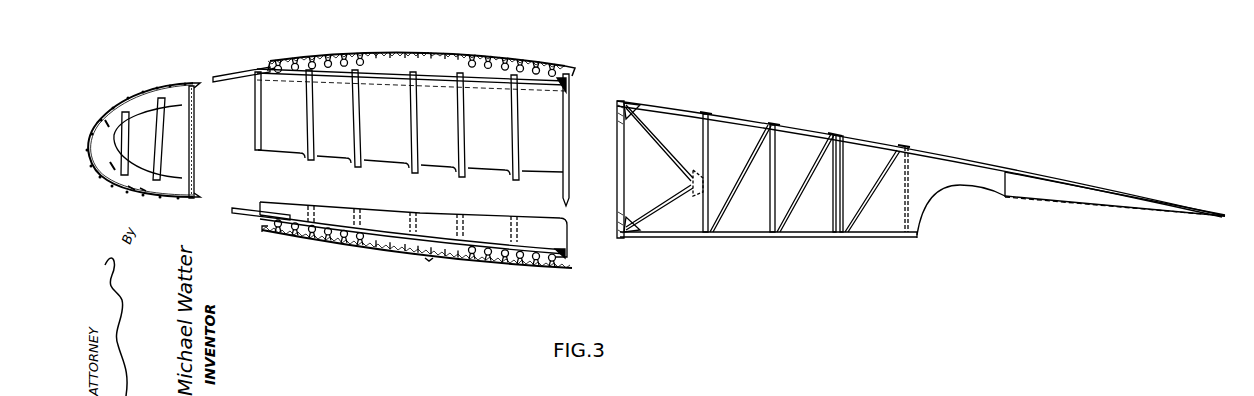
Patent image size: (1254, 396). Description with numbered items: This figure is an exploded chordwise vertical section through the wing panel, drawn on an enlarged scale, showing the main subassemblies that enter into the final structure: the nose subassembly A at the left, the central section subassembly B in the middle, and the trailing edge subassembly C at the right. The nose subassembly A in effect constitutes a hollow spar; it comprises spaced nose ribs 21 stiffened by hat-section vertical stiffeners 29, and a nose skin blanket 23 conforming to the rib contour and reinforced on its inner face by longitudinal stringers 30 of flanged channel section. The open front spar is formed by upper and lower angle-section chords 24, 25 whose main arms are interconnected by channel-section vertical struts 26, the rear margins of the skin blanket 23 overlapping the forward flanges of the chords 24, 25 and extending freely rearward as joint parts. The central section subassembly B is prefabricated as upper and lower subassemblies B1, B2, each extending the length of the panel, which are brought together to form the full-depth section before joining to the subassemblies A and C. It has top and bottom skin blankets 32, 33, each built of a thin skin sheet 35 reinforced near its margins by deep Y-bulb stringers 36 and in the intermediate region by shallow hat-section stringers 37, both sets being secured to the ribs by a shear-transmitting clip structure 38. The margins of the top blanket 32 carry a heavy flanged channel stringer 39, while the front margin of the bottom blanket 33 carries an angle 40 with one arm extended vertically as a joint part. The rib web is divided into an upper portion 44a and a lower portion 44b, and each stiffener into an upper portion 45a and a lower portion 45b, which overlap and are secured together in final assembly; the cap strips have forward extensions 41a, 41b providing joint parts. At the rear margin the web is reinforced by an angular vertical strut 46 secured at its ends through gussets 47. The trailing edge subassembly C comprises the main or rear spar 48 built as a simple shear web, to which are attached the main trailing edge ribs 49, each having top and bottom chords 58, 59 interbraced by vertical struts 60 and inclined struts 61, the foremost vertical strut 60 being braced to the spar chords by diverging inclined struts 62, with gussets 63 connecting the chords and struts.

The nose rib 21 is at (142, 112).
The nose skin blanket 23 is at (145, 89).
The upper angle-section chord 24 is at (198, 86).
The lower angle-section chord 25 is at (198, 193).
The vertical strut 26 is at (195, 150).
The vertical stiffener 29 is at (160, 148).
The longitudinal stringer 30 is at (146, 185).
The top skin blanket 32 is at (360, 51).
The bottom skin blanket 33 is at (350, 258).
The skin sheet 35 is at (327, 250).
The Y-bulb section stringer 36 is at (314, 245).
The hat-section stringer 37 is at (418, 261).
The shear transmitting clip structure 38 is at (432, 263).
The flanged channel section stringer 39 is at (270, 62).
The angle 40 is at (254, 238).
The forward extension of top cap strip 41a is at (237, 78).
The forward extension of bottom cap strip 41b is at (246, 208).
The upper web portion 44a is at (449, 127).
The lower web portion 44b is at (448, 235).
The upper stiffener portion 45a is at (458, 148).
The lower stiffener portion 45b is at (458, 215).
The vertical strut 46 is at (563, 143).
The gusset 47 is at (560, 84).
The main or rear spar 48 is at (626, 170).
The main trailing edge rib 49 is at (779, 125).
The top chord 58 is at (812, 132).
The bottom chord 59 is at (757, 238).
The vertical strut 60 is at (776, 165).
The inclined strut 61 is at (800, 202).
The inclined strut 62 is at (667, 209).
The gusset 63 is at (630, 222).
The nose subassembly A is at (133, 77).
The central section subassembly B is at (570, 70).
The upper subassembly B1 is at (483, 46).
The lower subassembly B2 is at (473, 272).
The trailing edge subassembly C is at (736, 113).